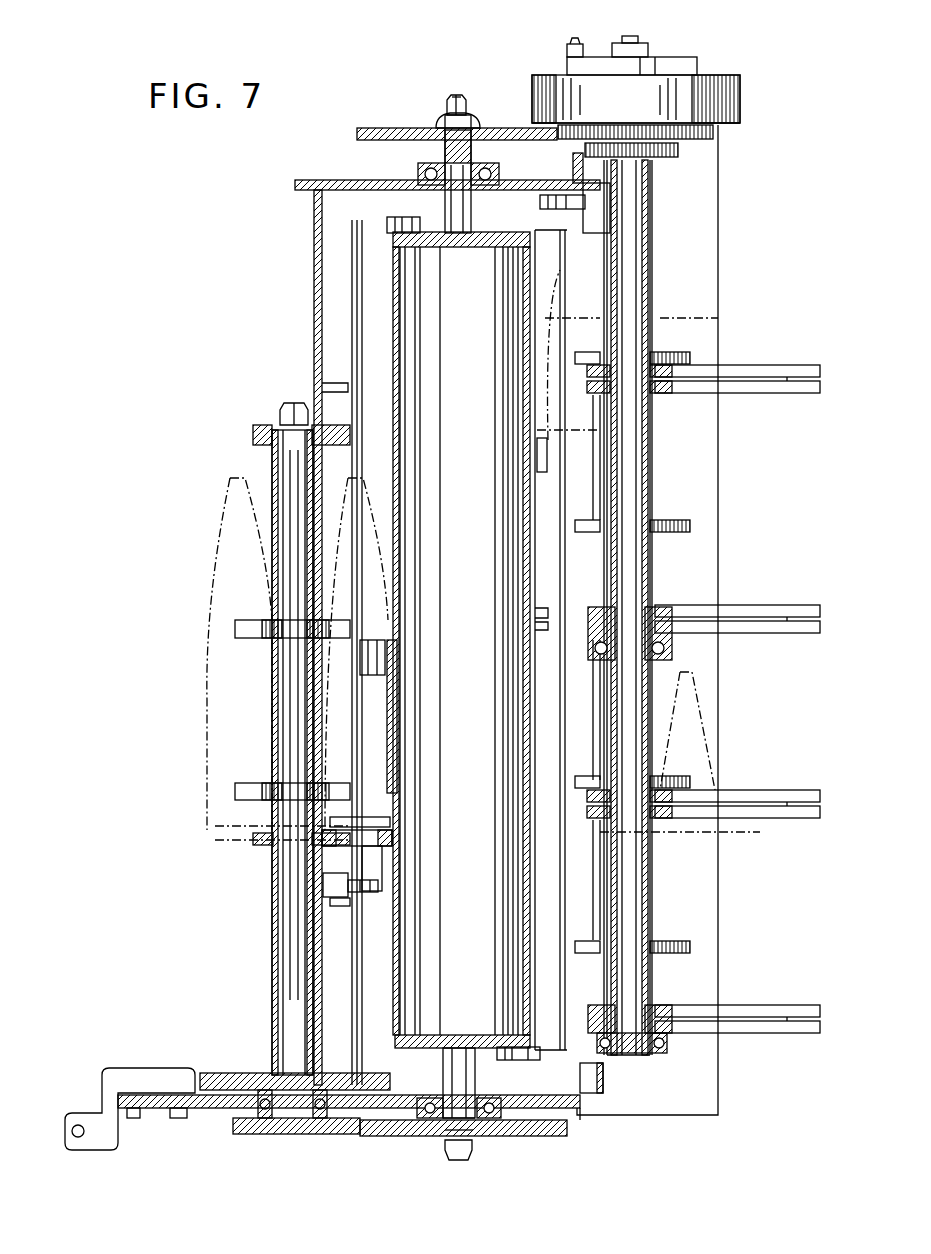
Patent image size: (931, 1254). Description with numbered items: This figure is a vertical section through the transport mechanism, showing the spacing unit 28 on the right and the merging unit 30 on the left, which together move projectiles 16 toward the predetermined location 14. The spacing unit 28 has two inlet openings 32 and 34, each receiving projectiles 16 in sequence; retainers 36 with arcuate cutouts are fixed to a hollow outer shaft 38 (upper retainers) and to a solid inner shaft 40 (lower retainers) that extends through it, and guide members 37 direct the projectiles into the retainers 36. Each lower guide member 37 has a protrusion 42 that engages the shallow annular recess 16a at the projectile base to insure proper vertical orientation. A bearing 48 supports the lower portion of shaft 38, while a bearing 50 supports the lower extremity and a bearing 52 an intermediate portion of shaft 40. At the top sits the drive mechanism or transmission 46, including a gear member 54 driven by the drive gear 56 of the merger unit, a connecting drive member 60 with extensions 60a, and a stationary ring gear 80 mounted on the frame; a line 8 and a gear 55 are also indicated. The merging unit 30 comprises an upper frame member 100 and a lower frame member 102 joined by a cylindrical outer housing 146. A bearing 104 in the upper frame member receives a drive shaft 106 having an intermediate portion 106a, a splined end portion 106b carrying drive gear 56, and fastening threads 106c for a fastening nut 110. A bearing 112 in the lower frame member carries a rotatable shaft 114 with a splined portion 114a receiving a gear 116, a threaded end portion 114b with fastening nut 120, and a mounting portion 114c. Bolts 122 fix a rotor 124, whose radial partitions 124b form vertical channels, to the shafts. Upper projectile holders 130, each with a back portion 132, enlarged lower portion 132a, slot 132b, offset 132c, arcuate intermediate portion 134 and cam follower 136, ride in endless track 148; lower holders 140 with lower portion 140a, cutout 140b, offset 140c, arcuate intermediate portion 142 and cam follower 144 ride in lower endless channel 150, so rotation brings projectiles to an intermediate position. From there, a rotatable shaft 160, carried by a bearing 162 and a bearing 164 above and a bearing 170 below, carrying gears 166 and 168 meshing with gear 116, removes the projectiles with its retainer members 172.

The section line 8 is at (560, 322).
The predetermined location 14 is at (215, 503).
The projectiles 16 is at (215, 552).
The shallow annular recess 16a is at (215, 832).
The spacing unit 28 is at (648, 40).
The merging unit 30 is at (428, 103).
The inlet opening 32 is at (735, 357).
The inlet opening 34 is at (720, 870).
The retainers 36 is at (672, 354).
The guide members 37 is at (800, 368).
The hollow outer shaft 38 is at (652, 552).
The solid inner shaft 40 is at (640, 893).
The protrusion 42 is at (628, 596).
The drive mechanism or transmission 46 is at (750, 110).
The bearing 48 is at (668, 648).
The bearing 50 is at (645, 1052).
The bearing 52 is at (690, 674).
The gear member 54 is at (715, 131).
The gear 55 is at (670, 157).
The drive gear 56 is at (372, 128).
The connecting drive member 60 is at (590, 58).
The extensions 60a is at (648, 68).
The stationary ring gear 80 is at (742, 97).
The upper frame member 100 is at (296, 183).
The lower frame member 102 is at (560, 1112).
The bearing 104 is at (422, 172).
The drive shaft 106 is at (447, 205).
The intermediate portion 106a is at (476, 128).
The splined end portion 106b is at (447, 148).
The fastening threads 106c is at (465, 97).
The fastening nut 110 is at (455, 96).
The bearing 112 is at (498, 1128).
The rotatable shaft 114 is at (462, 1050).
The splined portion 114a is at (440, 1130).
The threaded end portion 114b is at (450, 1152).
The mounting portion 114c is at (450, 1036).
The gear 116 is at (540, 1128).
The fastening nut 120 is at (468, 1152).
The bolts 122 is at (390, 226).
The rotor 124 is at (397, 262).
The partitions 124b is at (352, 305).
The projectile holders 130 is at (525, 348).
The back portion 132 is at (525, 538).
The enlarged lower portion 132a is at (538, 626).
The slot or opening 132b is at (540, 612).
The offset 132c is at (542, 212).
The arcuate intermediate portion 134 is at (540, 452).
The cam follower 136 is at (578, 185).
The holders 140 is at (393, 691).
The lower portion 140a is at (400, 822).
The groove or cutout 140b is at (392, 840).
The offset 140c is at (382, 882).
The arcuate intermediate portion 142 is at (395, 656).
The cam follower 144 is at (323, 885).
The cylindrical outer housing 146 is at (314, 286).
The endless track 148 is at (612, 230).
The lower endless channel 150 is at (330, 905).
The rotatable shaft 160 is at (272, 460).
The bearing 162 is at (280, 415).
The bearing 164 is at (255, 435).
The gear 166 is at (225, 1075).
The gear 168 is at (255, 1136).
The bearing 170 is at (322, 1136).
The retainer members 172 is at (235, 628).